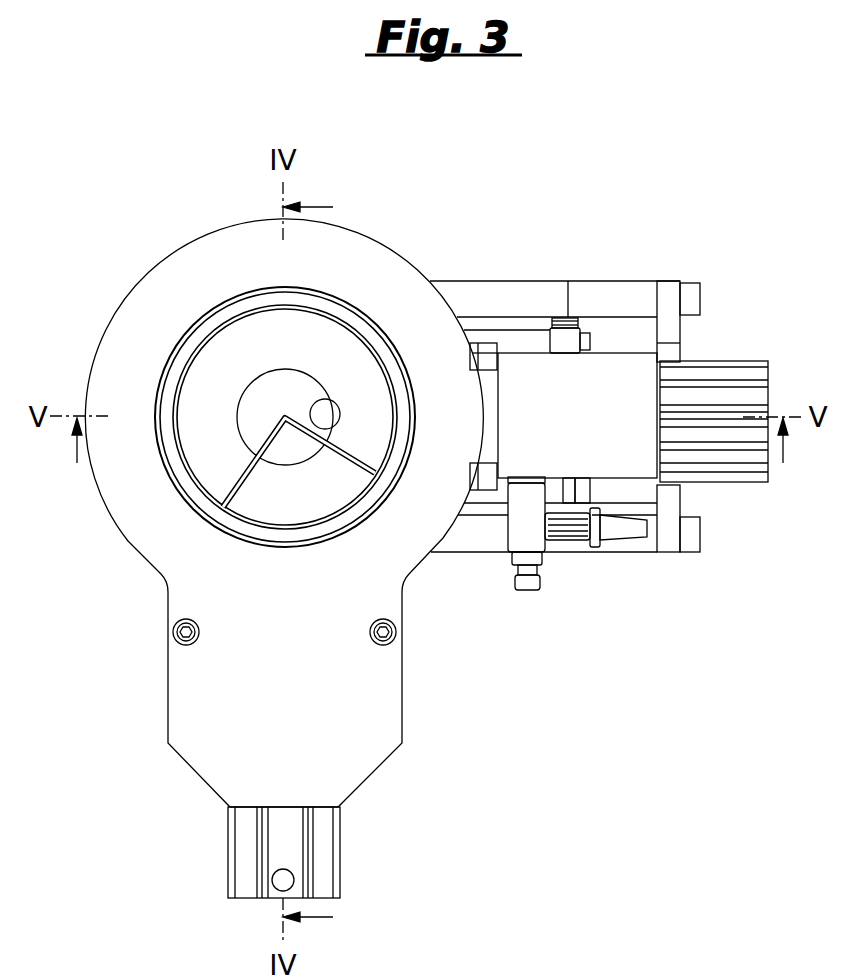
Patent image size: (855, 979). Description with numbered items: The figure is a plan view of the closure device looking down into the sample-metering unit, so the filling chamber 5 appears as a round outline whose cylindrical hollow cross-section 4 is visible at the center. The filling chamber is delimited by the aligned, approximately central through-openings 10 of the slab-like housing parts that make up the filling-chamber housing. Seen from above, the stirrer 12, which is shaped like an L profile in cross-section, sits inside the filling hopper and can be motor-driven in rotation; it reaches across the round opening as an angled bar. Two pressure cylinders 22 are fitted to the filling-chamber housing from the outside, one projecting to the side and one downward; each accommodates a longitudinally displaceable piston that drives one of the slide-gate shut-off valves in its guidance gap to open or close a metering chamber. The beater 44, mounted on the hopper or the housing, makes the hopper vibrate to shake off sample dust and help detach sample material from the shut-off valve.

The hollow cross-section 4 is at (270, 397).
The filling chamber 5 is at (302, 392).
The through-opening 10 is at (347, 417).
The stirrer 12 is at (250, 462).
The pressure cylinder 22 is at (735, 375).
The beater 44 is at (612, 373).